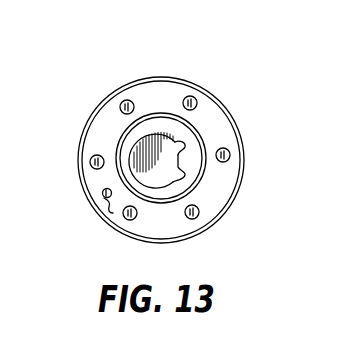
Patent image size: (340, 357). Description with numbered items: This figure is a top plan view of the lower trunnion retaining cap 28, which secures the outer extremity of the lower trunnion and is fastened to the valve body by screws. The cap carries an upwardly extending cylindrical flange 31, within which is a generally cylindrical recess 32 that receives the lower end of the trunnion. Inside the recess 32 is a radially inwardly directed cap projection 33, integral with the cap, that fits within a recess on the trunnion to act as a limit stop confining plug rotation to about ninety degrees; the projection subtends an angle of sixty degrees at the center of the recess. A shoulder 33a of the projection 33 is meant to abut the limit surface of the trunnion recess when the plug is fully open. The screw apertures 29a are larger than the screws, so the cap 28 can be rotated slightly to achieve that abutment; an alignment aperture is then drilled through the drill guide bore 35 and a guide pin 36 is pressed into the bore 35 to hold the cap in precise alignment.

The trunnion retaining cap 28 is at (158, 93).
The cylindrical flange 31 is at (126, 152).
The cylindrical recess 32 is at (172, 180).
The cap projection 33 is at (186, 151).
The shoulder 33a is at (183, 172).
The screw apertures 29a is at (221, 208).
The drill guide bore 35 is at (112, 206).
The guide pin 36 is at (102, 193).